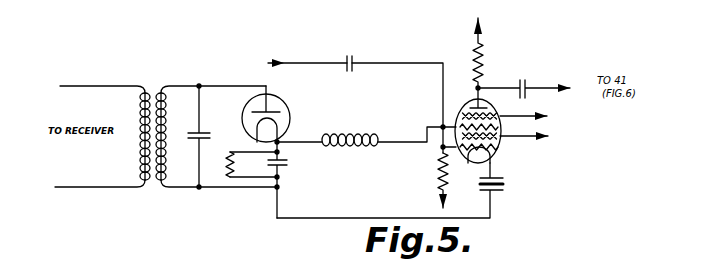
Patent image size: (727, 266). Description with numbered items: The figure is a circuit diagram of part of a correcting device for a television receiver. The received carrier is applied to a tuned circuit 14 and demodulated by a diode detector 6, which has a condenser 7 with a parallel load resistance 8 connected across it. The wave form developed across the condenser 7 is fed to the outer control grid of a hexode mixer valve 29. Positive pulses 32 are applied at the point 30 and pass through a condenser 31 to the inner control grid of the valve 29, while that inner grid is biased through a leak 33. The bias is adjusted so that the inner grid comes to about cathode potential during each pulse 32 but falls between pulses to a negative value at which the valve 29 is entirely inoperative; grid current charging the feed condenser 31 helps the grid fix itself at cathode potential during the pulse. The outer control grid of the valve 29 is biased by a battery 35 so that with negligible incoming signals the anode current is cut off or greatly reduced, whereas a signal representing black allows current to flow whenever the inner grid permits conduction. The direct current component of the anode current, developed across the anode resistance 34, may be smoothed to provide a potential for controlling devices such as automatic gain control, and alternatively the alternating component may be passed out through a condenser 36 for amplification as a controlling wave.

The tuned circuit 14 is at (156, 89).
The diode detector 6 is at (287, 108).
The condenser 7 is at (286, 168).
The load resistance 8 is at (227, 166).
The input point for positive pulses 30 is at (323, 63).
The condenser 31 is at (355, 58).
The positive pulses 32 is at (412, 139).
The leak 33 is at (440, 176).
The hexode mixer valve 29 is at (501, 128).
The anode resistance 34 is at (483, 70).
The battery 35 is at (503, 188).
The condenser 36 is at (528, 86).